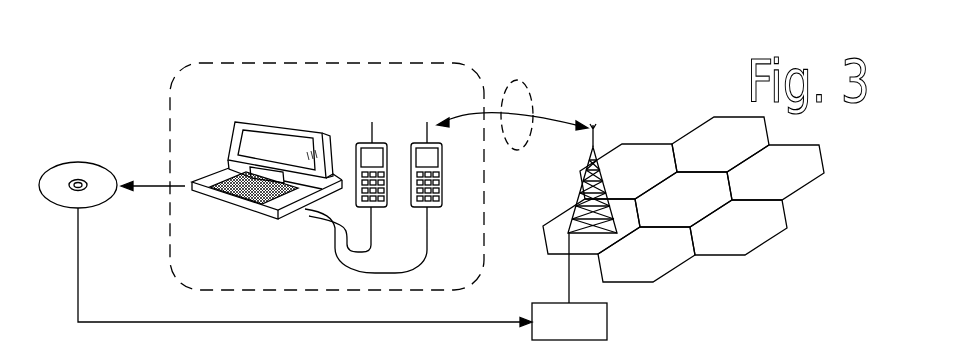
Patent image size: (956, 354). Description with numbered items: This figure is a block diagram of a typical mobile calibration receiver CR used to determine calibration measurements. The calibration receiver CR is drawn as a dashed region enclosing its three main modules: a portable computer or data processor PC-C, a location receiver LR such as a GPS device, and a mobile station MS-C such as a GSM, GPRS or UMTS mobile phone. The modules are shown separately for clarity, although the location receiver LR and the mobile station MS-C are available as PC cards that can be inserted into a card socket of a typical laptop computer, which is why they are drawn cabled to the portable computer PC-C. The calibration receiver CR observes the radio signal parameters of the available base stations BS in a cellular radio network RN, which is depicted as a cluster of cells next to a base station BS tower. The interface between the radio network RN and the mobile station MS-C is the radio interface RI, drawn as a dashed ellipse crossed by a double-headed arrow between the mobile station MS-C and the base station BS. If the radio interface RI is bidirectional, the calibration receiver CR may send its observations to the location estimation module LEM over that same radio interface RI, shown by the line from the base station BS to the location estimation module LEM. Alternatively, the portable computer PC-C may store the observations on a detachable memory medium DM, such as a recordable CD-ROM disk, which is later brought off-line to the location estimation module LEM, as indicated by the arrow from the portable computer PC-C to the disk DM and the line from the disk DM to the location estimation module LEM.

The detachable memory medium DM is at (100, 163).
The calibration receiver CR is at (167, 233).
The portable computer PC-C is at (293, 100).
The location receiver LR is at (362, 142).
The mobile station MS-C is at (420, 142).
The radio interface RI is at (513, 153).
The base station BS is at (595, 122).
The cellular radio network RN is at (762, 247).
The location estimation module LEM is at (569, 321).